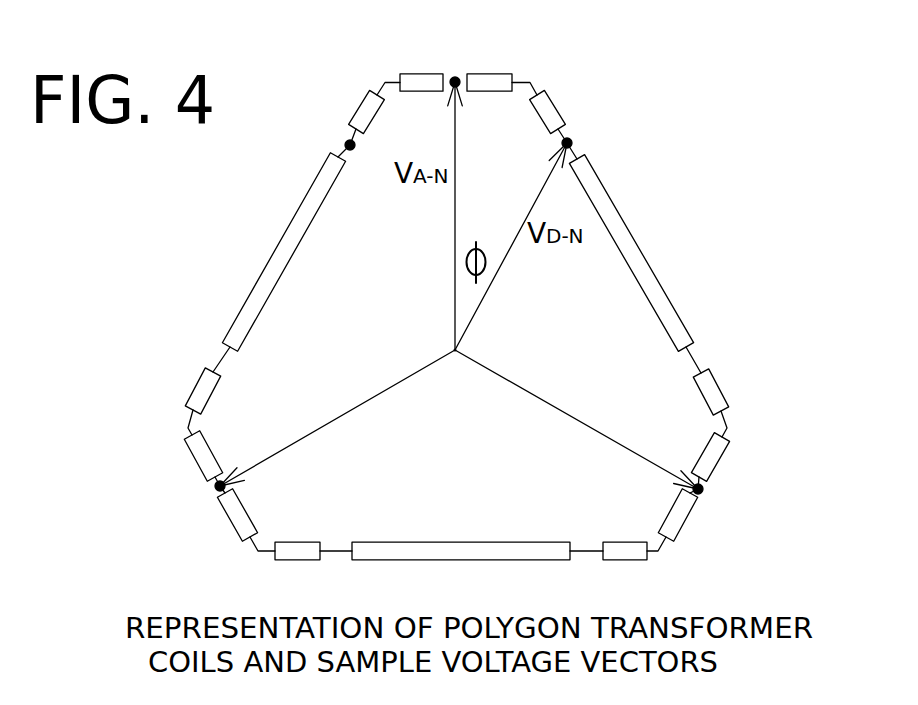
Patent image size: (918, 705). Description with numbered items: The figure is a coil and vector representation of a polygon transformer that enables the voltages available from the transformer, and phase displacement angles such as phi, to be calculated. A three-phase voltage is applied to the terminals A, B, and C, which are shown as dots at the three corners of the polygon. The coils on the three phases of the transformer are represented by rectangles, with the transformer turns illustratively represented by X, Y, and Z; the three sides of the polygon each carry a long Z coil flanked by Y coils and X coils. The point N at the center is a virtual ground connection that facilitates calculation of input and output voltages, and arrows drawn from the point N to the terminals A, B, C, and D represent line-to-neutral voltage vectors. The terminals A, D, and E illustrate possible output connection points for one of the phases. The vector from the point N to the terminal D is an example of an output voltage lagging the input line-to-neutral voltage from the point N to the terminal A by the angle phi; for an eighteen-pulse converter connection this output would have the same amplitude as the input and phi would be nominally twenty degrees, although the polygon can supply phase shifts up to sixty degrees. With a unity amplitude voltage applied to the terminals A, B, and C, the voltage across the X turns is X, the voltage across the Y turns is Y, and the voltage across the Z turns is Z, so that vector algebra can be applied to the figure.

The terminal A is at (453, 77).
The terminal B is at (701, 491).
The terminal C is at (218, 490).
The terminal D is at (570, 141).
The terminal E is at (346, 146).
The virtual ground connection N is at (457, 369).
The X turns X is at (460, 299).
The Y turns Y is at (466, 341).
The Z turns Z is at (457, 377).